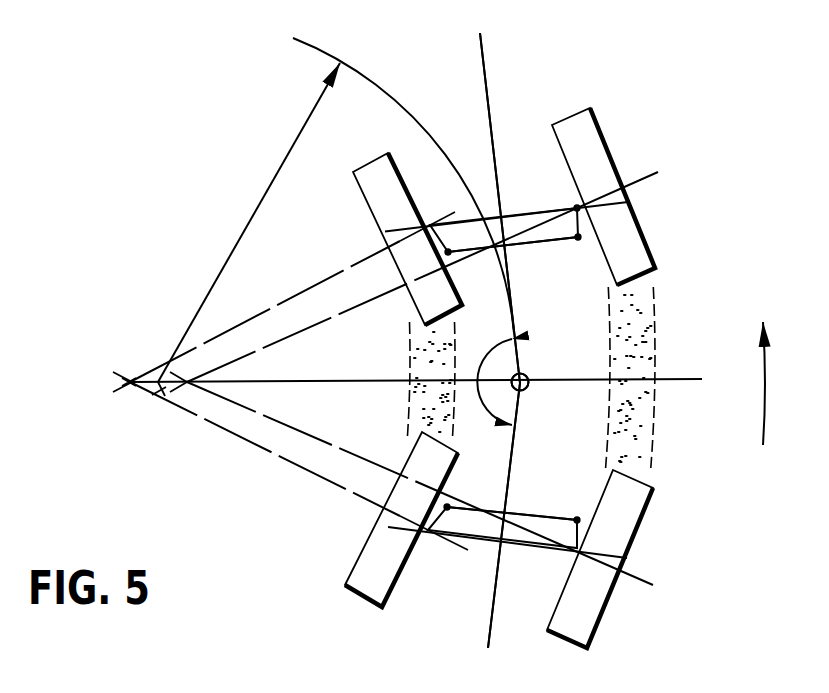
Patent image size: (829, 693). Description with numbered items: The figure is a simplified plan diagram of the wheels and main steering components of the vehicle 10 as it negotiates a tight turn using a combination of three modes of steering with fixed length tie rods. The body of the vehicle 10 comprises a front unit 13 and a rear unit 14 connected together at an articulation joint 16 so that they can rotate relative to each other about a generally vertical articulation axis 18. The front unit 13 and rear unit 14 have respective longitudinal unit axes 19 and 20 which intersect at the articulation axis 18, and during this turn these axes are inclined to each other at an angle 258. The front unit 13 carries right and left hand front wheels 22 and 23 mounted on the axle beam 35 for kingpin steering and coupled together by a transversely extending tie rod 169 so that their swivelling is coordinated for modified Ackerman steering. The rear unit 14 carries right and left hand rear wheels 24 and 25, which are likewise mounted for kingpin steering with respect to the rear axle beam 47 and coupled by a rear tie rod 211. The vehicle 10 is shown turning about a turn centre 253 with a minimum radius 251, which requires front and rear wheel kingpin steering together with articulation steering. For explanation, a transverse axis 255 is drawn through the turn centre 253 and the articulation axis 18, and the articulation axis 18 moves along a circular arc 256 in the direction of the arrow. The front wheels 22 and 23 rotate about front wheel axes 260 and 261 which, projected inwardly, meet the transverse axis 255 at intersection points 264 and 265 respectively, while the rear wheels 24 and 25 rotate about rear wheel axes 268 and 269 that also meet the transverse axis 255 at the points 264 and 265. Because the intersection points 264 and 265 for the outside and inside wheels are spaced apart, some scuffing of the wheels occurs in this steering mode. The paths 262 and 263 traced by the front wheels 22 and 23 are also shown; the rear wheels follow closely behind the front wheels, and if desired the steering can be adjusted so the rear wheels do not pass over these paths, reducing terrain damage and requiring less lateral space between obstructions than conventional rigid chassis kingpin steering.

The vehicle 10 is at (689, 120).
The front unit 13 is at (520, 103).
The rear unit 14 is at (459, 615).
The articulation joint 16 is at (527, 390).
The articulation axis 18 is at (520, 382).
The longitudinal unit axis of front unit 19 is at (491, 76).
The longitudinal unit axis of rear unit 20 is at (492, 633).
The right hand front wheel 22 is at (585, 135).
The left hand front wheel 23 is at (375, 196).
The right hand rear wheel 24 is at (628, 508).
The left hand rear wheel 25 is at (353, 569).
The axle beam 35 is at (530, 214).
The rear axle beam 47 is at (518, 544).
The tie rod 169 is at (557, 240).
The tie rod 211 is at (527, 510).
The minimum radius 251 is at (278, 172).
The turn centre 253 is at (161, 397).
The transverse axis 255 is at (346, 380).
The circular arc 256 is at (393, 97).
The angle 258 is at (486, 364).
The front wheel axis 260 is at (658, 172).
The front wheel axis 261 is at (343, 270).
The path 262 is at (652, 336).
The path 263 is at (408, 346).
The intersection point 264 is at (190, 382).
The intersection point 265 is at (130, 384).
The rear wheel axis 268 is at (653, 585).
The rear wheel axis 269 is at (280, 458).